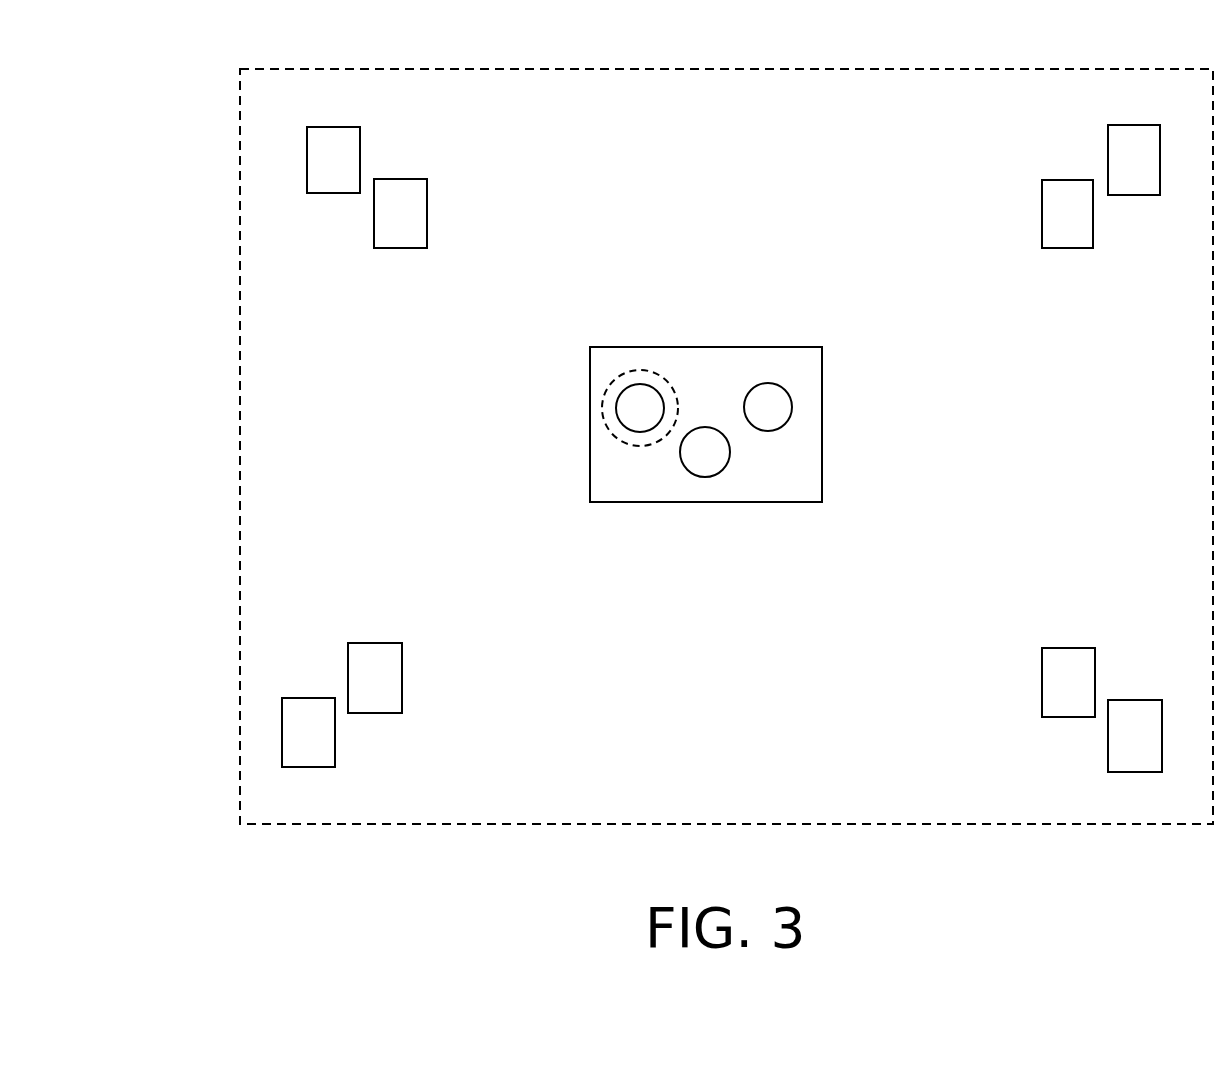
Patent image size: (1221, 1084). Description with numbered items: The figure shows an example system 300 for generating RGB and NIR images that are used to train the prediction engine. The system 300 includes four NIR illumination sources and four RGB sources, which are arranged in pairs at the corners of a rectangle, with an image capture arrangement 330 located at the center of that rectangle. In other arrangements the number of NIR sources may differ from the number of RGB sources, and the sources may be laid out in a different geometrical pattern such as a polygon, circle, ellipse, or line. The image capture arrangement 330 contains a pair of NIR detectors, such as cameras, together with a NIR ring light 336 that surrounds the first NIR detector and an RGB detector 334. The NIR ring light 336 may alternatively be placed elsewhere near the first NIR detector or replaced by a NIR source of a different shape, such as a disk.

The system 300 is at (179, 76).
The image capture arrangement 330 is at (691, 457).
The RGB detector 334 is at (705, 452).
The NIR ring light 336 is at (605, 397).